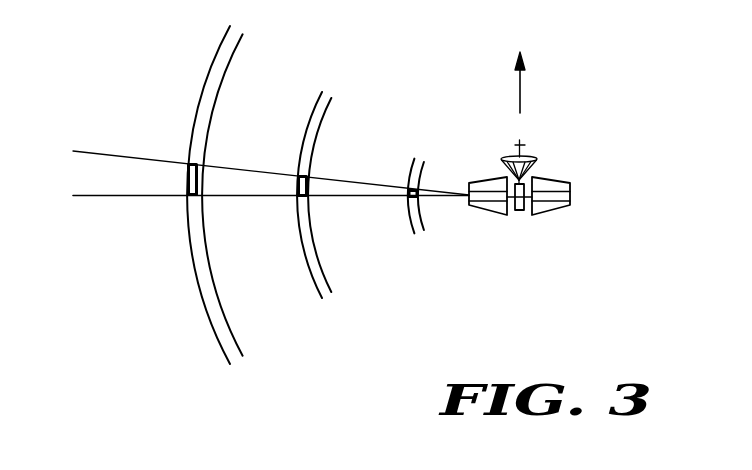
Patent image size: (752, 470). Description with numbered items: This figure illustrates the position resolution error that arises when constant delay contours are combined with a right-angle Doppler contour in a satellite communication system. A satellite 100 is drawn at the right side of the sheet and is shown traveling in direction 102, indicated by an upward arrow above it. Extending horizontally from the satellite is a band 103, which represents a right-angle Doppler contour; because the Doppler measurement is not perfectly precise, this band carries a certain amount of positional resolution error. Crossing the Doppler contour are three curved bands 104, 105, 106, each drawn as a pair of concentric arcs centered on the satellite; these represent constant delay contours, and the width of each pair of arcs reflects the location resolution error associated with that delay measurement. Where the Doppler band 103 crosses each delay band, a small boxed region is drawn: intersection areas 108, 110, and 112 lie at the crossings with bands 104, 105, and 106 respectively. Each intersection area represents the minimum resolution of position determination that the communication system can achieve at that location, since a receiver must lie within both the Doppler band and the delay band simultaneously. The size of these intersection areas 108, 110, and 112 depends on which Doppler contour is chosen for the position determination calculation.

The satellite 100 is at (518, 220).
The direction 102 is at (521, 89).
The band 103 is at (112, 196).
The band 104 is at (405, 218).
The band 105 is at (312, 282).
The band 106 is at (218, 343).
The intersection area 108 is at (407, 190).
The intersection area 110 is at (295, 177).
The intersection area 112 is at (186, 170).